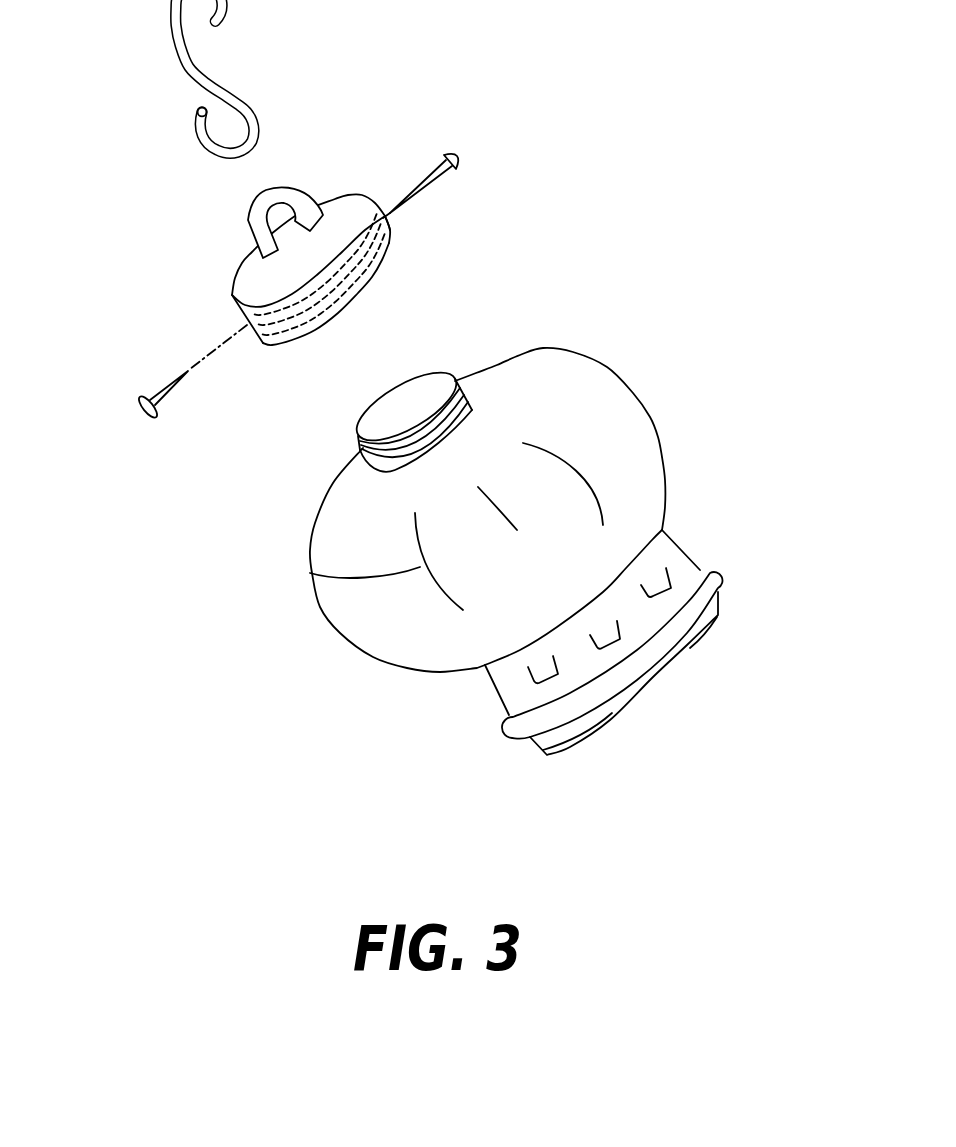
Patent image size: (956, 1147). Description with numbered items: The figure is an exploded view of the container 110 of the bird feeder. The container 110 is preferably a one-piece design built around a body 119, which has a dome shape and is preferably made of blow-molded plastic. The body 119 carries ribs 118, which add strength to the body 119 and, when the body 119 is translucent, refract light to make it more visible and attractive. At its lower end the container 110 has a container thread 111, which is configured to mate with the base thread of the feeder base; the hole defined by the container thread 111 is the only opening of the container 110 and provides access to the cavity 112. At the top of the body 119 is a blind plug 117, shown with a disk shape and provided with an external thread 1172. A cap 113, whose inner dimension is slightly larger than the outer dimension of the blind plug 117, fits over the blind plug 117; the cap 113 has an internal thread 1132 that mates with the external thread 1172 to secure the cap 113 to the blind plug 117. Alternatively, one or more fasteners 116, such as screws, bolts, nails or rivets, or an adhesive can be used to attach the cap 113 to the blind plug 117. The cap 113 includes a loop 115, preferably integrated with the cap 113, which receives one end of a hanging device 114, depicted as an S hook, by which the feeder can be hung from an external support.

The container 110 is at (762, 155).
The container thread 111 is at (724, 627).
The cavity 112 is at (666, 661).
The cap 113 is at (349, 214).
The internal thread 1132 is at (394, 250).
The hanging device 114 is at (244, 89).
The loop 115 is at (287, 188).
The fasteners 116 is at (462, 157).
The blind plug 117 is at (381, 382).
The external thread 1172 is at (360, 447).
The ribs 118 is at (310, 573).
The body 119 is at (497, 510).